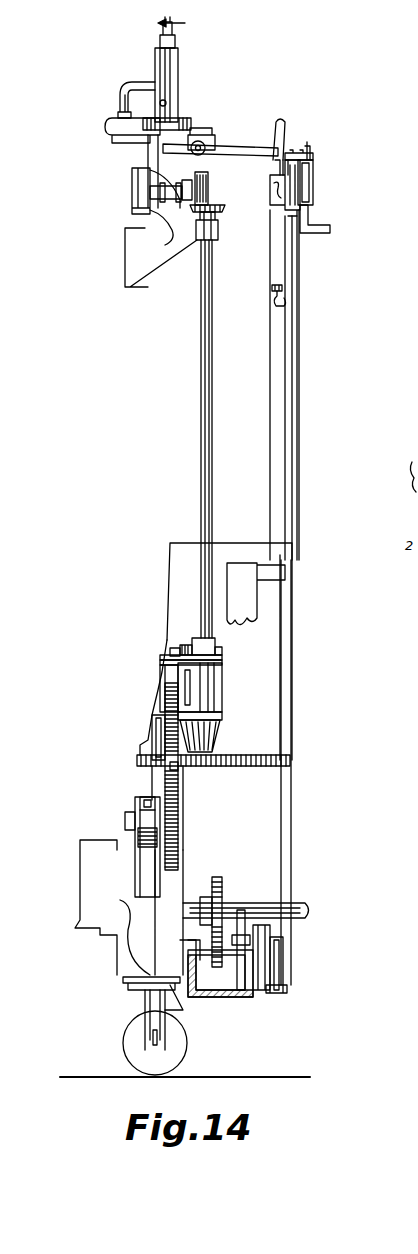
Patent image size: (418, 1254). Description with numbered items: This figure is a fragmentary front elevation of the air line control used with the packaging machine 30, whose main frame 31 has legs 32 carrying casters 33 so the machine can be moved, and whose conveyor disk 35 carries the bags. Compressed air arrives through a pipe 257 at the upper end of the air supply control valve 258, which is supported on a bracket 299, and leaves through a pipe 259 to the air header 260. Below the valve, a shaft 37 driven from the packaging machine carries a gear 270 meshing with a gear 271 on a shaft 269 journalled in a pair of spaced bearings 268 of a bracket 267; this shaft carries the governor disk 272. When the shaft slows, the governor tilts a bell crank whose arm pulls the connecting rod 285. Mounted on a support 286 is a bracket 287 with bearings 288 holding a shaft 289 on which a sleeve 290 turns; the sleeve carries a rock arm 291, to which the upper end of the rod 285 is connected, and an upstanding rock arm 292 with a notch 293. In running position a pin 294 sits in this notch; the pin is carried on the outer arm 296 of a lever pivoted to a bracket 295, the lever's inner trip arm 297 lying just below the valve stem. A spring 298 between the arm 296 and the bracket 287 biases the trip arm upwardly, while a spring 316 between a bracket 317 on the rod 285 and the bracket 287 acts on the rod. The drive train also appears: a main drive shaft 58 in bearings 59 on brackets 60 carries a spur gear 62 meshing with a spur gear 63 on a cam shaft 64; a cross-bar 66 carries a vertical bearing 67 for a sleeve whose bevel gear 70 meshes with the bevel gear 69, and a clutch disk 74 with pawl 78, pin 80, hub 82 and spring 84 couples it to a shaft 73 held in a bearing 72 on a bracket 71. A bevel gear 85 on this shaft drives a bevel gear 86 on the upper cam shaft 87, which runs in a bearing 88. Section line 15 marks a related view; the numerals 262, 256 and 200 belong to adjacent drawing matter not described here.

The section line 15 is at (181, 25).
The pipe 257 is at (176, 38).
The air supply control valve 258 is at (180, 85).
The pipe 259 is at (140, 85).
The air header 260 is at (105, 125).
The bracket 299 is at (145, 146).
The outer arm 296 is at (258, 149).
The inner trip arm 297 is at (215, 140).
The bracket 295 is at (200, 141).
The bearing 88 is at (195, 178).
The pin 294 is at (221, 184).
The bevel gear 86 is at (210, 186).
The bevel gear 85 is at (226, 206).
The bearing 72 is at (220, 236).
The upper cam shaft 87 is at (172, 228).
The bracket 71 is at (161, 261).
The notch 293 is at (283, 125).
The upstanding rock arm 292 is at (298, 152).
The sleeve 290 is at (290, 160).
The shaft 289 is at (312, 150).
The bearings 288 is at (315, 162).
The spring 298 is at (315, 172).
The rock arm 291 is at (302, 190).
The bracket 287 is at (318, 230).
The support 286 is at (290, 335).
The spring 316 is at (284, 286).
The bracket 317 is at (286, 300).
The connecting rod 285 is at (291, 812).
The shaft 73 is at (201, 380).
The packaging machine 30 is at (300, 720).
The hub 82 is at (193, 638).
The spring 84 is at (180, 648).
The pin 80 is at (170, 651).
The pawl 78 is at (222, 657).
The clutch disk 74 is at (222, 663).
The cross-bar 66 is at (170, 680).
The vertical bearing 67 is at (222, 690).
The bevel gear 70 is at (215, 720).
The bevel gear 69 is at (197, 742).
The cam shaft 64 is at (152, 728).
The spur gear 62 is at (178, 838).
The conveyor disk 35 is at (292, 760).
The spur gear 63 is at (180, 768).
The brackets 60 is at (142, 868).
The bearings 59 is at (142, 808).
The main drive shaft 58 is at (126, 820).
The main frame 31 is at (118, 932).
The legs 32 is at (125, 962).
The bearings 268 is at (160, 968).
The casters 33 is at (130, 1040).
The bracket 267 is at (225, 998).
The gear 270 is at (218, 880).
The shaft 37 is at (292, 904).
The gear 271 is at (226, 912).
The disk 272 is at (300, 916).
The shaft 269 is at (285, 947).
The element 262 is at (402, 268).
The element 256 is at (416, 393).
The element 200 is at (400, 510).